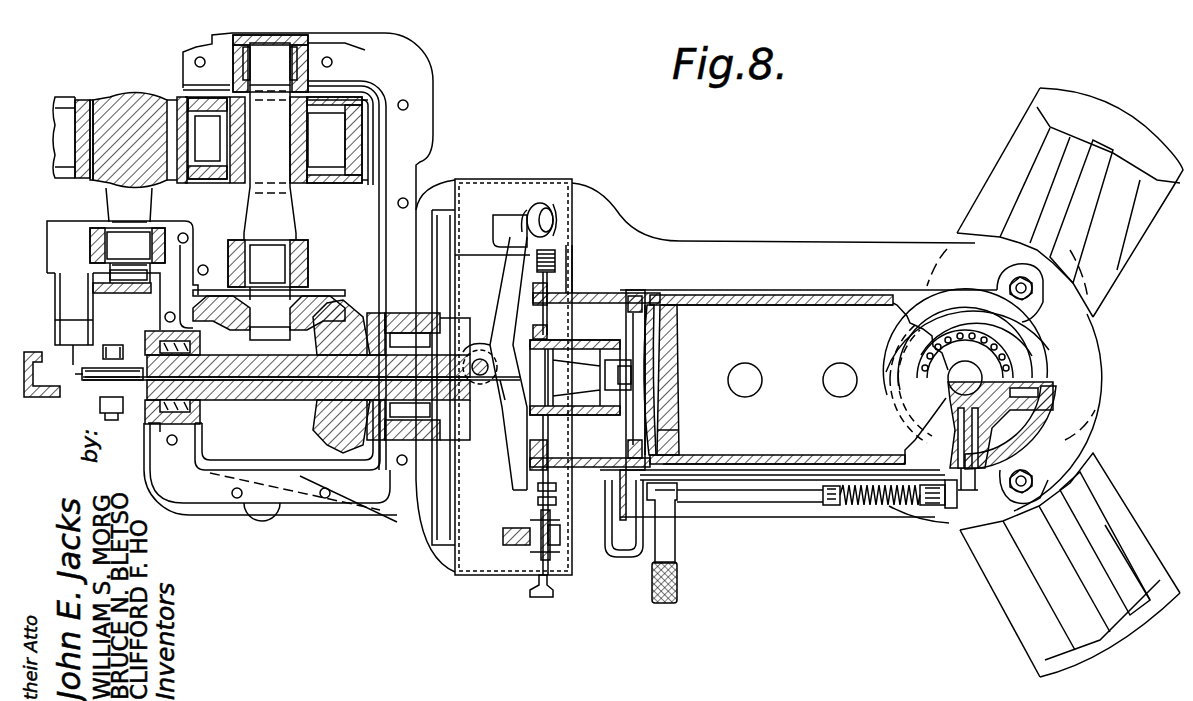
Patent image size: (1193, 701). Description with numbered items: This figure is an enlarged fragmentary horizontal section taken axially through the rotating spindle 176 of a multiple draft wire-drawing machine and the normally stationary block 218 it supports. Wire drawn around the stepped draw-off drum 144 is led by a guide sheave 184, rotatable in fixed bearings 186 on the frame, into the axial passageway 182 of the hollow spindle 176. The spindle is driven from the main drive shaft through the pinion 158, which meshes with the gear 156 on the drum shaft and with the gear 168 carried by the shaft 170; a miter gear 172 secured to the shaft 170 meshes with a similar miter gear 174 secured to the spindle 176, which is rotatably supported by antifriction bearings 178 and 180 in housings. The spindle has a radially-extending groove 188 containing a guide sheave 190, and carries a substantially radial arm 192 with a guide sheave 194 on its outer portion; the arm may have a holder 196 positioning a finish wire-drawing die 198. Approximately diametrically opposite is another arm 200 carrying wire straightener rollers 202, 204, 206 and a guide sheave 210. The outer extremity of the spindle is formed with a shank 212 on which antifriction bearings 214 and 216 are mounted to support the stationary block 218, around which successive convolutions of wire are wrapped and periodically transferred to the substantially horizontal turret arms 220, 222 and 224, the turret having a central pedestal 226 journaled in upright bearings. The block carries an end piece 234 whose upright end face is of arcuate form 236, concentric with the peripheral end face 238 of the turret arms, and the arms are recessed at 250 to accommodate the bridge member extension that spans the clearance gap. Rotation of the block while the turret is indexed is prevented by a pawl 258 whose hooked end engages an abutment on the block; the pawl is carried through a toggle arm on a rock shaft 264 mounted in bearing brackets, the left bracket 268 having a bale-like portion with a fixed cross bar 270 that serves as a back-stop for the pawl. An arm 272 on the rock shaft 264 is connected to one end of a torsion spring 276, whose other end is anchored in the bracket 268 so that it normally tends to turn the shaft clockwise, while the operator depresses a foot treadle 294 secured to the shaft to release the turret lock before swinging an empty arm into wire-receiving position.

The stepped draw-off drum 144 is at (40, 352).
The gear 156 is at (80, 100).
The pinion 158 is at (150, 95).
The gear 168 is at (370, 125).
The shaft 170 is at (275, 207).
The miter gear 172 is at (203, 250).
The miter gear 174 is at (332, 447).
The spindle 176 is at (282, 395).
The antifriction bearing 178 is at (160, 333).
The antifriction bearing 180 is at (397, 522).
The passageway 182 is at (228, 385).
The guide sheave 184 is at (100, 383).
The fixed bearings 186 is at (115, 408).
The radially-extending groove 188 is at (463, 333).
The guide sheave 190 is at (486, 385).
The radial arm 192 is at (483, 235).
The guide sheave 194 is at (548, 205).
The holder 196 is at (573, 223).
The finish wire-drawing die 198 is at (558, 264).
The arm 200 is at (528, 505).
The wire straightener roller 202 is at (530, 500).
The wire straightener roller 204 is at (530, 487).
The wire straightener roller 206 is at (568, 453).
The guide sheave 210 is at (540, 553).
The shank 212 is at (580, 422).
The antifriction bearing 214 is at (560, 334).
The antifriction bearing 216 is at (680, 330).
The stationary block 218 is at (622, 298).
The turret arm 220 is at (768, 297).
The turret arm 222 is at (1003, 170).
The turret arm 224 is at (1017, 623).
The central pedestal 226 is at (1000, 402).
The end piece 234 is at (679, 377).
The arcuate end face 236 is at (680, 418).
The peripheral end face 238 is at (680, 353).
The recess 250 is at (1053, 237).
The pawl 258 is at (662, 500).
The rock shaft 264 is at (767, 497).
The bracket 268 is at (670, 477).
The fixed cross bar 270 is at (627, 553).
The arm 272 is at (835, 505).
The torsion spring 276 is at (880, 507).
The foot treadle 294 is at (680, 575).